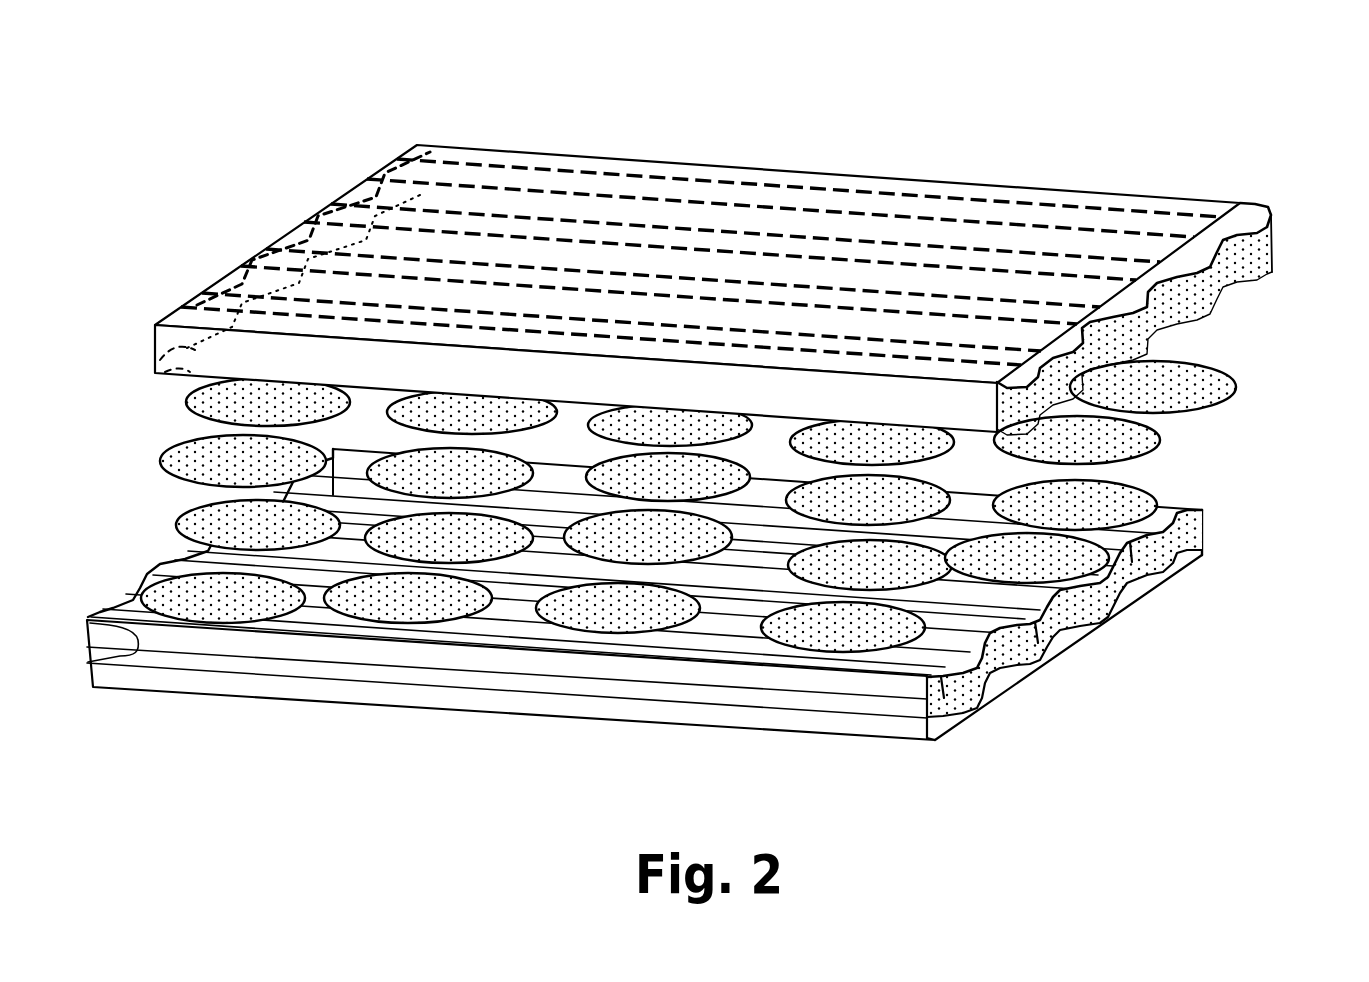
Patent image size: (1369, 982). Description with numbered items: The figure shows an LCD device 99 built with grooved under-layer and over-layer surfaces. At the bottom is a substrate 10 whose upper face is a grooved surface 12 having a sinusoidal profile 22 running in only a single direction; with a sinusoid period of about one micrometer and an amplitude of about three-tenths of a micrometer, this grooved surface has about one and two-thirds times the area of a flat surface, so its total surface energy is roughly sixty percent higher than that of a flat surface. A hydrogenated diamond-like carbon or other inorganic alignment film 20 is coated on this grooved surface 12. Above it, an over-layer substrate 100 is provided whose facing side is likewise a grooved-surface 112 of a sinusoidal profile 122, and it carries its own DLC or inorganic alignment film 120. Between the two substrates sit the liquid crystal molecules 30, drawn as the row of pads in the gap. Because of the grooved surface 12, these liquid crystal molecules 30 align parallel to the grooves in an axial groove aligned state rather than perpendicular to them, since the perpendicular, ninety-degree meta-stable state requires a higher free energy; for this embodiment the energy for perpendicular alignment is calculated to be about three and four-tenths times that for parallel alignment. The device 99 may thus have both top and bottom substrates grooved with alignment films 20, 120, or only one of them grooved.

The LCD device 99 is at (712, 242).
The over-layer substrate 100 is at (155, 350).
The grooved-surface 112 is at (1232, 243).
The alignment film 120 is at (1248, 272).
The sinusoidal profile 122 is at (1270, 193).
The substrate 10 is at (693, 633).
The grooved surface 12 is at (1012, 689).
The alignment film 20 is at (1092, 595).
The sinusoidal profile 22 is at (1202, 538).
The liquid crystal molecules 30 is at (126, 517).